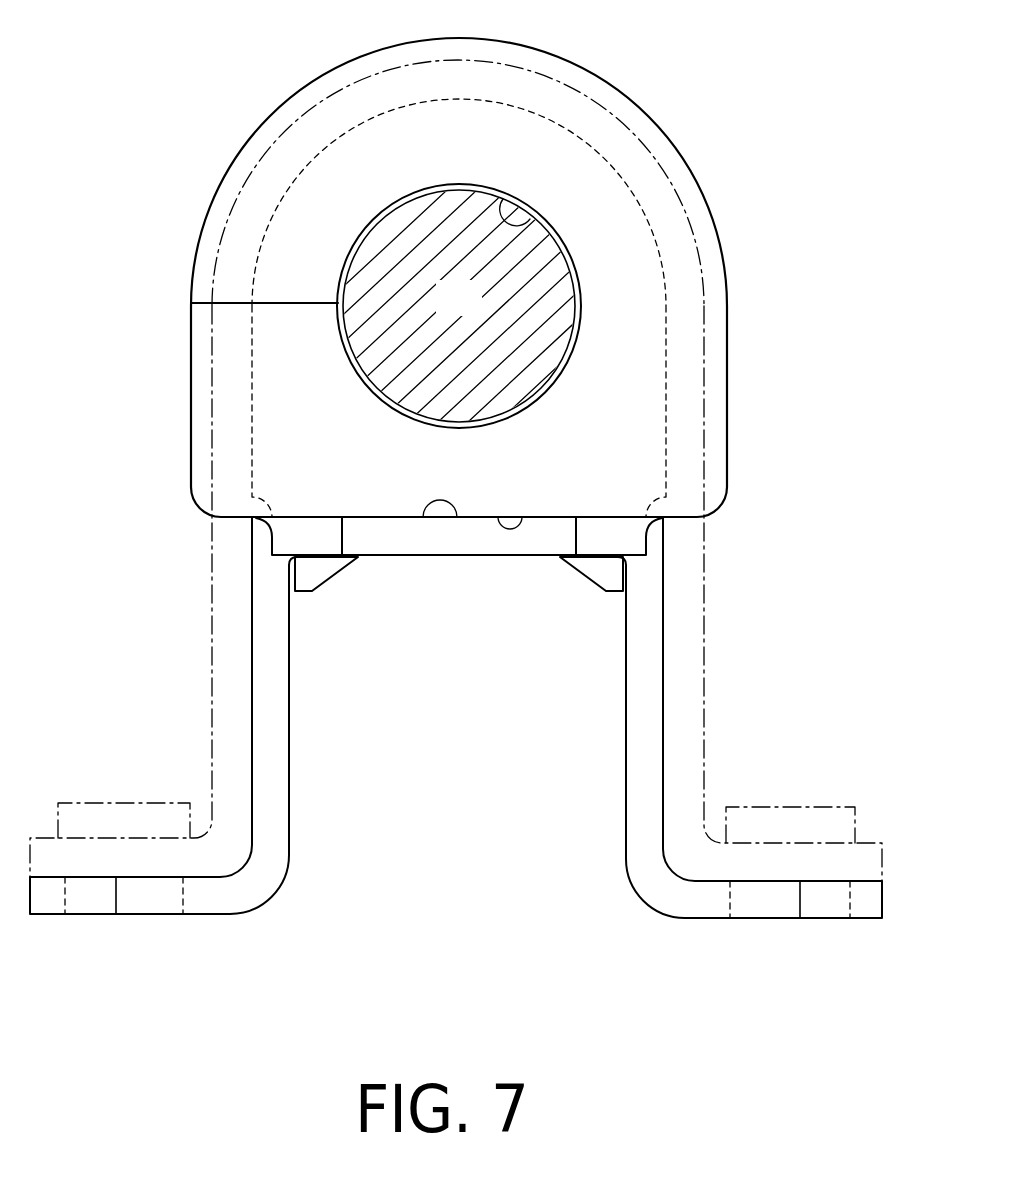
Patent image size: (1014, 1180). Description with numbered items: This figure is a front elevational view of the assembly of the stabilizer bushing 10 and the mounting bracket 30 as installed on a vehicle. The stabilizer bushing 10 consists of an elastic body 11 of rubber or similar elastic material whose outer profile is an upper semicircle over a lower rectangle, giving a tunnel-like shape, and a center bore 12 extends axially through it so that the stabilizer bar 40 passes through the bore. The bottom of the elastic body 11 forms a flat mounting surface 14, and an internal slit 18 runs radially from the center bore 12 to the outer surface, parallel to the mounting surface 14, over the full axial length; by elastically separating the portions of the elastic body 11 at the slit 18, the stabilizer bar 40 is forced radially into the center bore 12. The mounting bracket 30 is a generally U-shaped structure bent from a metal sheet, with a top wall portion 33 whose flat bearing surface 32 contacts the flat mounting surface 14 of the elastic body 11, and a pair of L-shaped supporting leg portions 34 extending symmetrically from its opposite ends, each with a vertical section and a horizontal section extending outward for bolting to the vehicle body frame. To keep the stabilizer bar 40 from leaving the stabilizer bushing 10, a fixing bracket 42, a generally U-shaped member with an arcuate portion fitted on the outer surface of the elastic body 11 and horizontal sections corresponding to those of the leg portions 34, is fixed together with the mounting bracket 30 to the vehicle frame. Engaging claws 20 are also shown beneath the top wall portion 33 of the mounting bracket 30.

The stabilizer bushing 10 is at (647, 70).
The elastic body 11 is at (645, 340).
The center bore 12 is at (537, 215).
The flat mounting surface 14 is at (530, 517).
The slit 18 is at (270, 302).
The engaging claw 20 is at (315, 610).
The mounting bracket 30 is at (456, 717).
The flat bearing surface 32 is at (422, 518).
The top wall portion 33 is at (493, 543).
The supporting leg portion 34 is at (263, 747).
The stabilizer bar 40 is at (477, 312).
The fixing bracket 42 is at (695, 578).